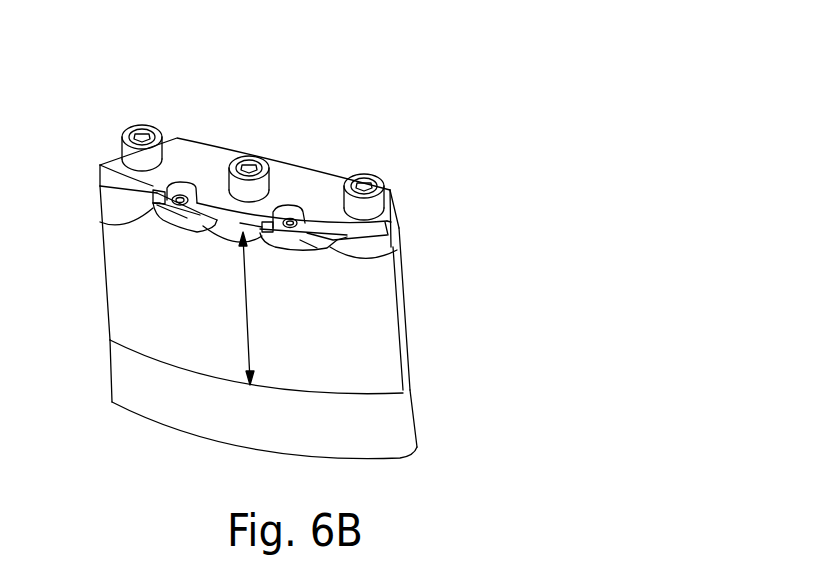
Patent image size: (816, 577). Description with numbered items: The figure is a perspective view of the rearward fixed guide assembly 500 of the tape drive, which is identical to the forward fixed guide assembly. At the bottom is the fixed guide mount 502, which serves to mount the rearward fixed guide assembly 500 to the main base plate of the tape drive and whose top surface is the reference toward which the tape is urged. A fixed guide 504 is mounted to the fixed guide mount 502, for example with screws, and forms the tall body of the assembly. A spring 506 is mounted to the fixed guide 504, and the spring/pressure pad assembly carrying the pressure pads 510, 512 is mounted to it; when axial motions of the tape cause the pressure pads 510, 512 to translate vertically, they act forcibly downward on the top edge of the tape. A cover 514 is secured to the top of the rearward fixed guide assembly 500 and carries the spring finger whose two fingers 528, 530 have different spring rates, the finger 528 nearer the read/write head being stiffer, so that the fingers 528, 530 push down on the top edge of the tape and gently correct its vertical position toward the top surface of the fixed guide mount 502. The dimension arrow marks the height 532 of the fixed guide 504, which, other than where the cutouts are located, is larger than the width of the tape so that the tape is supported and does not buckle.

The rearward fixed guide assembly 500 is at (368, 114).
The fixed guide mount 502 is at (399, 425).
The fixed guide 504 is at (394, 366).
The spring 506 is at (398, 231).
The pressure pad 510 is at (100, 223).
The pressure pad 512 is at (397, 252).
The cover 514 is at (332, 178).
The finger 528 is at (200, 182).
The finger 530 is at (303, 250).
The height 532 is at (243, 303).